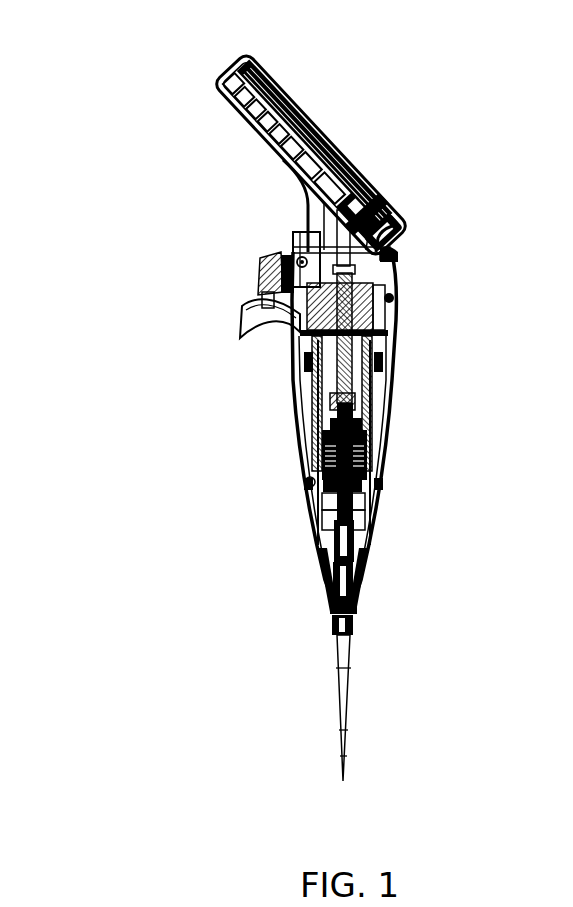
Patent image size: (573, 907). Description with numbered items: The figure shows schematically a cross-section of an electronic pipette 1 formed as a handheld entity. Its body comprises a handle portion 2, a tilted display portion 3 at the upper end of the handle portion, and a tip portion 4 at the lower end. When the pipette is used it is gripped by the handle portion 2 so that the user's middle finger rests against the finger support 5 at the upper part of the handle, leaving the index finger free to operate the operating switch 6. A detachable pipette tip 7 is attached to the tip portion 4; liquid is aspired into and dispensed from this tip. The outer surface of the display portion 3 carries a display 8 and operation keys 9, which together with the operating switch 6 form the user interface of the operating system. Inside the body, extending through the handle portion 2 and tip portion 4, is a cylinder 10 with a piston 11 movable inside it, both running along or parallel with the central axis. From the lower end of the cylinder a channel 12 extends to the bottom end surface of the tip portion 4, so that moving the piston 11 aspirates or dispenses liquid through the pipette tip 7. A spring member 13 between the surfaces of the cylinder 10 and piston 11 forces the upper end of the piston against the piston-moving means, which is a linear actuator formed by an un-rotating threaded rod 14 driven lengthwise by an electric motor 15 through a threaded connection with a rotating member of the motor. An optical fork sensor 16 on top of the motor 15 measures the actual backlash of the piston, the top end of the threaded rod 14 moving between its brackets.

The electronic pipette 1 is at (134, 110).
The handle portion 2 is at (292, 438).
The display portion 3 is at (221, 83).
The tip portion 4 is at (318, 561).
The finger support 5 is at (240, 312).
The operating switch 6 is at (262, 270).
The detachable pipette tip 7 is at (335, 697).
The display 8 is at (318, 121).
The operation keys 9 is at (374, 176).
The cylinder 10 is at (367, 550).
The piston 11 is at (352, 533).
The channel 12 is at (352, 628).
The spring member 13 is at (370, 443).
The threaded rod 14 is at (362, 342).
The electric motor 15 is at (396, 300).
The optical fork sensor 16 is at (400, 257).